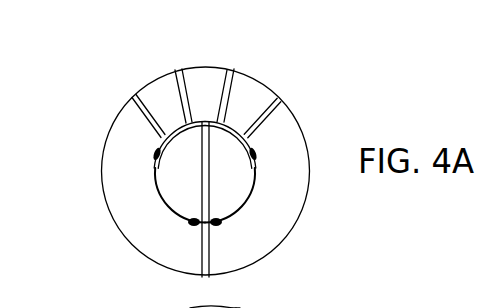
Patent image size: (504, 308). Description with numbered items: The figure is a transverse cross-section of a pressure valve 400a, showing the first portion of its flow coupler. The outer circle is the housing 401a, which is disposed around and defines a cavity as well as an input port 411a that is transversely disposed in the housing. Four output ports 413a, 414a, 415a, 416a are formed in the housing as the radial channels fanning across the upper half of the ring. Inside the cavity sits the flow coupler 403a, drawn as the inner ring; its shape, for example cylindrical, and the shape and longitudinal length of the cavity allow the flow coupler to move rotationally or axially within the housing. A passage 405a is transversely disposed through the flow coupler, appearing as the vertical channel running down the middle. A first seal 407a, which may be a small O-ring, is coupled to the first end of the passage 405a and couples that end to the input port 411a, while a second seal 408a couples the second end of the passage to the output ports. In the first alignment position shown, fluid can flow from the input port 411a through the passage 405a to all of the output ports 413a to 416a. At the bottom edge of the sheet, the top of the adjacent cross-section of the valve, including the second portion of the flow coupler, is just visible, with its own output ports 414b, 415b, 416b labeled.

In FIG. 4A, the pressure valve 400a is at (378, 89).
In FIG. 4A, the housing 401a is at (275, 180).
In FIG. 4A, the flow coupler 403a is at (172, 180).
In FIG. 4A, the passage 405a is at (201, 197).
In FIG. 4A, the first seal 407a is at (232, 231).
In FIG. 4A, the second seal 408a is at (145, 146).
In FIG. 4A, the input port 411a is at (188, 279).
In FIG. 4A, the output port 413a is at (116, 92).
In FIG. 4A, the output port 414a is at (165, 63).
In FIG. 4A, the output port 415a is at (244, 60).
In FIG. 4A, the output port 416a is at (293, 90).
In FIG. 4B, the output port 414b is at (168, 305).
In FIG. 4B, the output port 415b is at (261, 296).
In FIG. 4B, the output port 416b is at (303, 305).